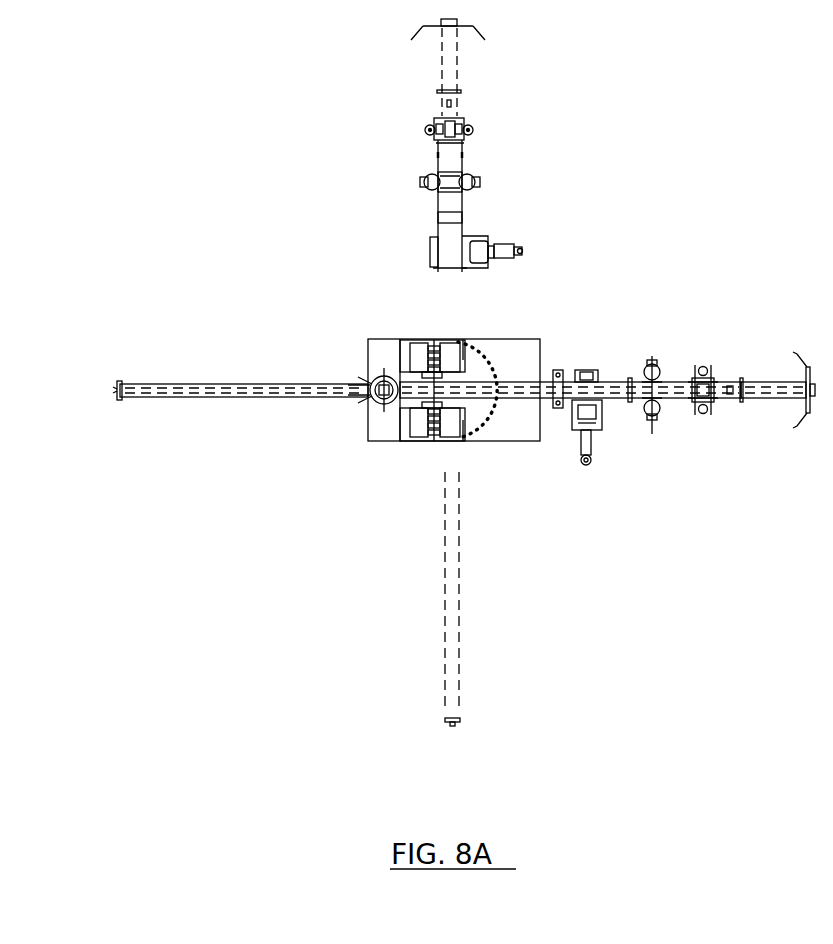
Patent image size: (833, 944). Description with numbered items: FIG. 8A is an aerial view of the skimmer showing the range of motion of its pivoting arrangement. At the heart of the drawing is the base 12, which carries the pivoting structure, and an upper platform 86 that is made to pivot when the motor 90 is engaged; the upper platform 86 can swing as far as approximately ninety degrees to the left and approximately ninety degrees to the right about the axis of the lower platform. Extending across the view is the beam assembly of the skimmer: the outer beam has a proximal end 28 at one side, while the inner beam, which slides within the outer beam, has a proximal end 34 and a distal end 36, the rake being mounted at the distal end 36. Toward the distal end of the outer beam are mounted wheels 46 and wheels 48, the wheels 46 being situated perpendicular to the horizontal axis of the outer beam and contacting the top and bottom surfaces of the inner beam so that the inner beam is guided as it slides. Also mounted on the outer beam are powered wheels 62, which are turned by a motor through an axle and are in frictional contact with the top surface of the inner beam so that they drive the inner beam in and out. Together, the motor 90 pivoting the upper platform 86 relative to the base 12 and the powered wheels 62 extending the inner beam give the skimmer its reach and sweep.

The base 12 is at (519, 446).
The proximal end 28 is at (224, 398).
The proximal end 34 is at (116, 387).
The distal end 36 is at (442, 67).
The wheels 46 is at (430, 128).
The wheels 48 is at (426, 183).
The powered wheels 62 is at (430, 251).
The upper platform 86 is at (515, 353).
The motor 90 is at (373, 382).